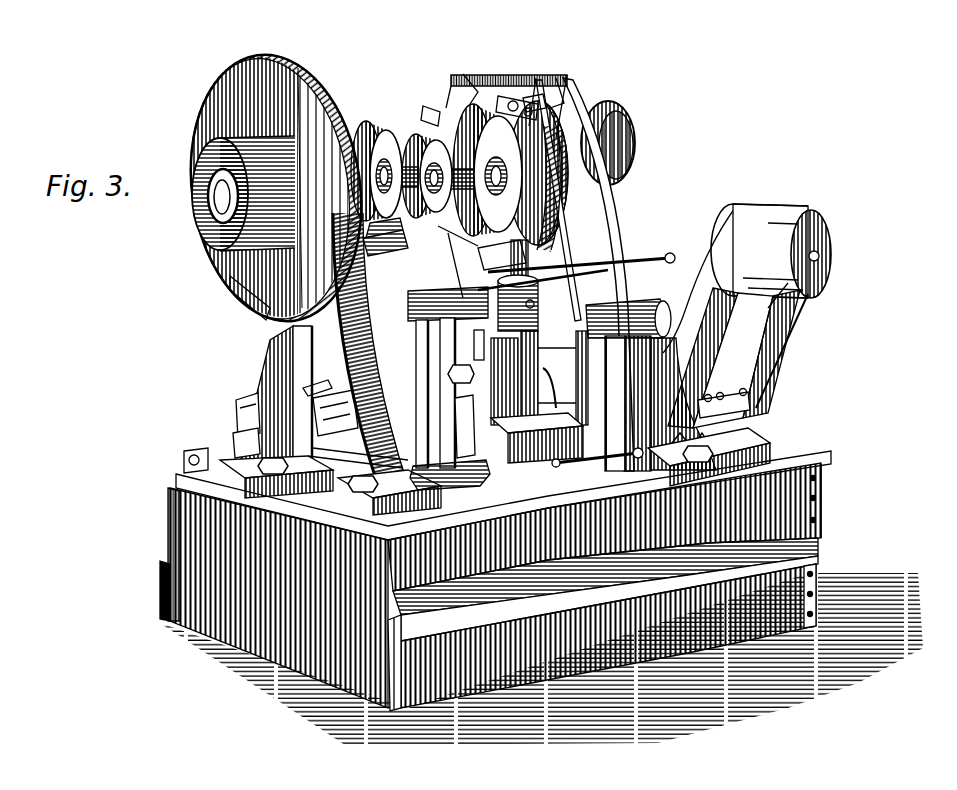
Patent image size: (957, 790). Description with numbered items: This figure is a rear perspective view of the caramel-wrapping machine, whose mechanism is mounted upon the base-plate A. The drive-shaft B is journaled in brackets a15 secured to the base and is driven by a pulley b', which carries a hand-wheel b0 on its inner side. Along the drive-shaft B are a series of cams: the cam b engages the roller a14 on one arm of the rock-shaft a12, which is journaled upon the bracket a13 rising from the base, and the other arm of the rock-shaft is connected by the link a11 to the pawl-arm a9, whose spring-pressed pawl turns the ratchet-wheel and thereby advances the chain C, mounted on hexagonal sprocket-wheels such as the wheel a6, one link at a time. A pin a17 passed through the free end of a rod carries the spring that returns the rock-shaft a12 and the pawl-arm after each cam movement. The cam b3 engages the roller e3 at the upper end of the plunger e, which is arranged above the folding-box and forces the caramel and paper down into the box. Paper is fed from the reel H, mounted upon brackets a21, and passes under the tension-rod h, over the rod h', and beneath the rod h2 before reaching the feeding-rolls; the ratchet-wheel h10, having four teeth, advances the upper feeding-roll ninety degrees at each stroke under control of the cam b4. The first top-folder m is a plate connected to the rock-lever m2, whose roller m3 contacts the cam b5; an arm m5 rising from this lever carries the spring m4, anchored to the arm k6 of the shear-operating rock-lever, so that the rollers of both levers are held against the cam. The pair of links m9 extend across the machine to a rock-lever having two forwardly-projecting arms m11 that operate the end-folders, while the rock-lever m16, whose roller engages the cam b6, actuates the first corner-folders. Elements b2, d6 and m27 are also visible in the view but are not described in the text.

The base-plate A is at (168, 466).
The drive-shaft B is at (212, 190).
The chain C is at (243, 393).
The reel H is at (772, 206).
The hand-wheel b0 is at (251, 48).
The pulley b' is at (227, 172).
The cam b is at (360, 134).
The pulley b2 is at (407, 127).
The cam b3 is at (583, 162).
The cam b4 is at (617, 100).
The cam b5 is at (463, 112).
The cam b6 is at (553, 103).
The arm k6 is at (418, 106).
The first top-folder m is at (482, 68).
The rock-lever m2 is at (560, 214).
The roller m3 is at (522, 78).
The spring m4 is at (455, 66).
The arm m5 is at (556, 68).
The links m9 is at (580, 256).
The forwardly-projecting arms m11 is at (540, 290).
The rock-lever m16 is at (560, 459).
The lever m27 is at (603, 258).
The hexagonal wheel a6 is at (233, 421).
The pawl-arm a9 is at (183, 440).
The link a11 is at (328, 472).
The rock-shaft a12 is at (292, 332).
The bracket a13 is at (466, 330).
The roller a14 is at (222, 268).
The brackets a15 is at (742, 442).
The pin a17 is at (393, 388).
The brackets a21 is at (727, 293).
The bracket d6 is at (400, 226).
The plunger e is at (540, 358).
The roller e3 is at (512, 247).
The tension-rod h is at (747, 397).
The tension-rod h' is at (776, 351).
The tension-rod h2 is at (750, 350).
The ratchet-wheel h10 is at (307, 378).